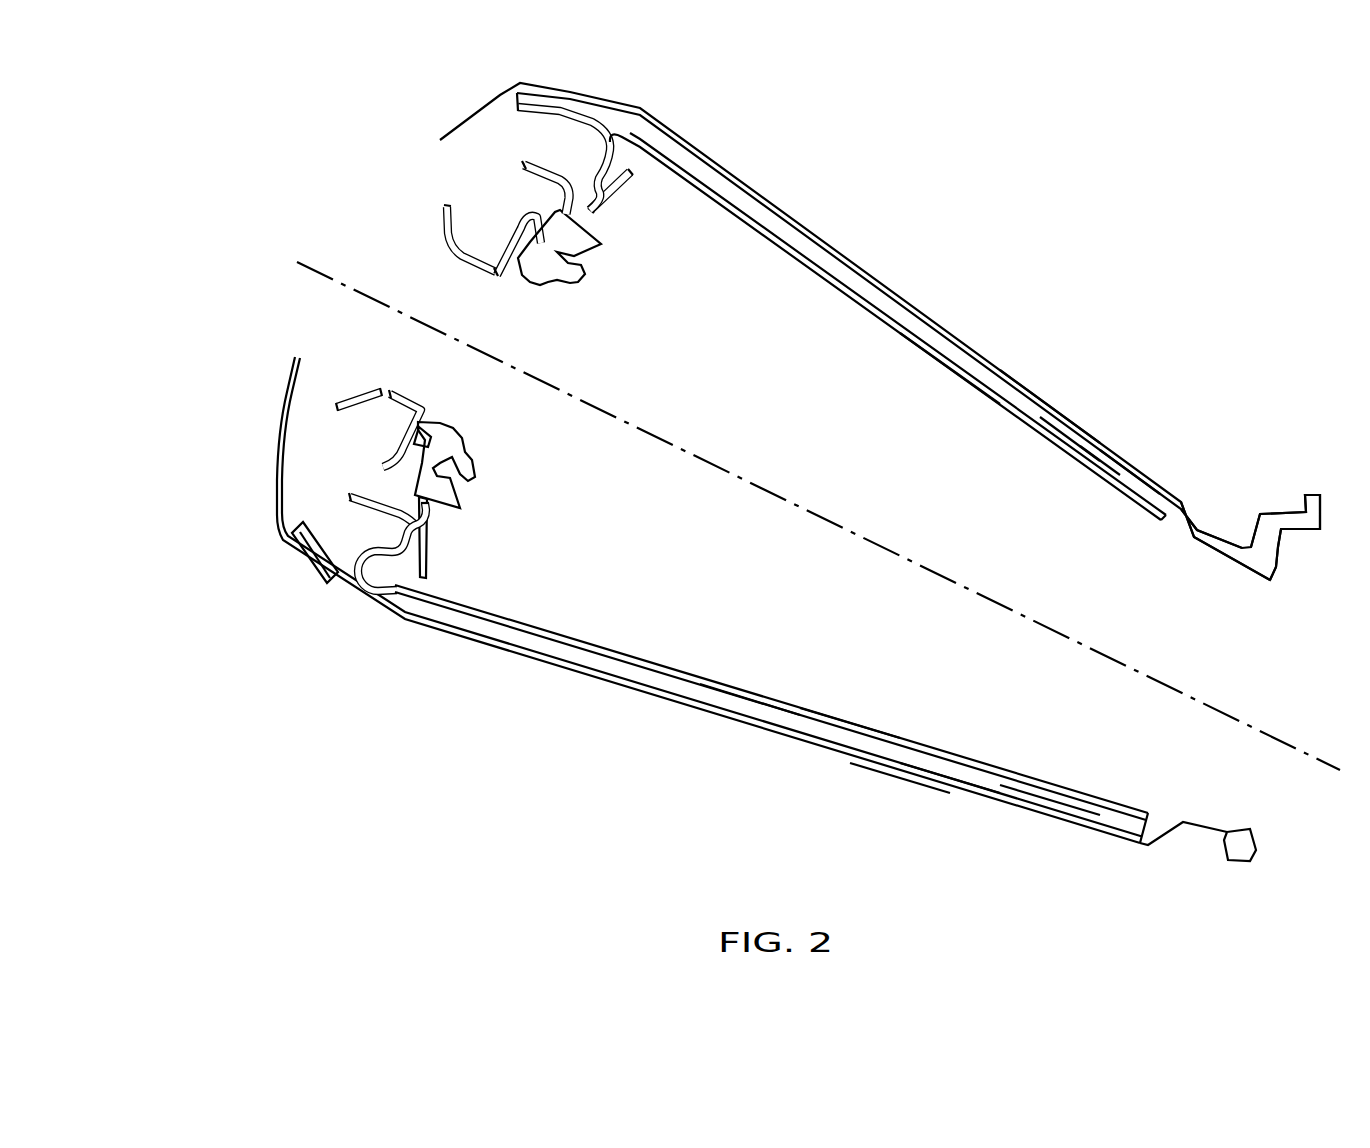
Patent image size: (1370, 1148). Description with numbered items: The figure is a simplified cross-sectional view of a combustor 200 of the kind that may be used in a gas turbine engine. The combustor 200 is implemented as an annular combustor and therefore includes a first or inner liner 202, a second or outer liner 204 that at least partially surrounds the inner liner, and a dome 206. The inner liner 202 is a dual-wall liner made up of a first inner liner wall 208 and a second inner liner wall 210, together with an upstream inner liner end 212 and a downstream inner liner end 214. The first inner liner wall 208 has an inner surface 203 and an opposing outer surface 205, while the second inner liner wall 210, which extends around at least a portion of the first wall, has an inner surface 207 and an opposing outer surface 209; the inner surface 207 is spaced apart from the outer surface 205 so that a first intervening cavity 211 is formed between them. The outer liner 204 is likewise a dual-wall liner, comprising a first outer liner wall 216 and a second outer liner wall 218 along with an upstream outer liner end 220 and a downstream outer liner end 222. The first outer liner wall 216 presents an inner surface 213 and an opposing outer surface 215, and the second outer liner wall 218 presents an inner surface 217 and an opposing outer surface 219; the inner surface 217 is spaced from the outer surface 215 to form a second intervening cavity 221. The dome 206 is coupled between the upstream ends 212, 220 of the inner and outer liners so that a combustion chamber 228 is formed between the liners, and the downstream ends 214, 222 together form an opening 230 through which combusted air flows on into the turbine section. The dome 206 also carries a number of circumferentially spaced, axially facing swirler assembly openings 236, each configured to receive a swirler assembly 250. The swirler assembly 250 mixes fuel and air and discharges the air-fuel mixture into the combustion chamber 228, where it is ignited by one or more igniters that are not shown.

The combustor 200 is at (258, 570).
The first (inner) liner 202 is at (627, 650).
The inner surface 203 is at (863, 722).
The second (outer) liner 204 is at (806, 283).
The outer surface 205 is at (964, 764).
The dome 206 is at (379, 418).
The inner surface 207 is at (821, 733).
The first inner liner wall 208 is at (696, 672).
The outer surface 209 is at (912, 782).
The second inner liner wall 210 is at (648, 700).
The first intervening cavity 211 is at (1038, 799).
The upstream inner liner end 212 is at (357, 603).
The inner surface 213 is at (968, 392).
The downstream inner liner end 214 is at (1130, 808).
The outer surface 215 is at (1068, 443).
The first outer liner wall 216 is at (865, 312).
The inner surface 217 is at (931, 334).
The second outer liner wall 218 is at (846, 256).
The outer surface 219 is at (1048, 400).
The upstream outer liner end 220 is at (596, 98).
The second intervening cavity 221 is at (1106, 460).
The downstream outer liner end 222 is at (1165, 493).
The combustion chamber 228 is at (750, 439).
The opening 230 is at (1240, 648).
The swirler assembly opening 236 is at (388, 256).
The swirler assembly 250 is at (547, 284).